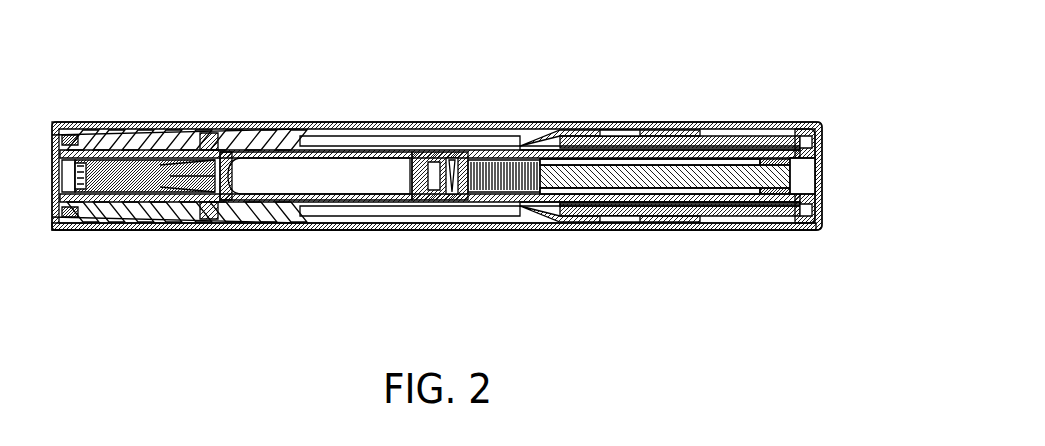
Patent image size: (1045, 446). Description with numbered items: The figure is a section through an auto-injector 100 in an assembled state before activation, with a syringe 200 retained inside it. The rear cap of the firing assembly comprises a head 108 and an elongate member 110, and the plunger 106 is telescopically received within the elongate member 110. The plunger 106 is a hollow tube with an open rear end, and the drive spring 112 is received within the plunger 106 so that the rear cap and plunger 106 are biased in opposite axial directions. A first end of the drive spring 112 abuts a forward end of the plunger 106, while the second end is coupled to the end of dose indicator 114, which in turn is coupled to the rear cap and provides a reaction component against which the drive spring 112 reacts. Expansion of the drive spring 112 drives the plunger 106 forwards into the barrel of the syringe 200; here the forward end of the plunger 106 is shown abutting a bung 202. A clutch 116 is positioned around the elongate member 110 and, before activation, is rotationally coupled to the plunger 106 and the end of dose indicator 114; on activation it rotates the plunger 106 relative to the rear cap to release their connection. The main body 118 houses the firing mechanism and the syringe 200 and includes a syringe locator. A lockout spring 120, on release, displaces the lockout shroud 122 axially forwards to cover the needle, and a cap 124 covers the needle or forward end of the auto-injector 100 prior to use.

The auto-injector 100 is at (338, 78).
The plunger 106 is at (708, 150).
The head 108 is at (822, 205).
The elongate member 110 is at (752, 206).
The drive spring 112 is at (532, 122).
The end of dose indicator 114 is at (651, 122).
The clutch 116 is at (617, 216).
The main body 118 is at (515, 232).
The lockout spring 120 is at (186, 124).
The lockout shroud 122 is at (352, 232).
The cap 124 is at (80, 122).
The syringe 200 is at (288, 204).
The bung 202 is at (425, 202).